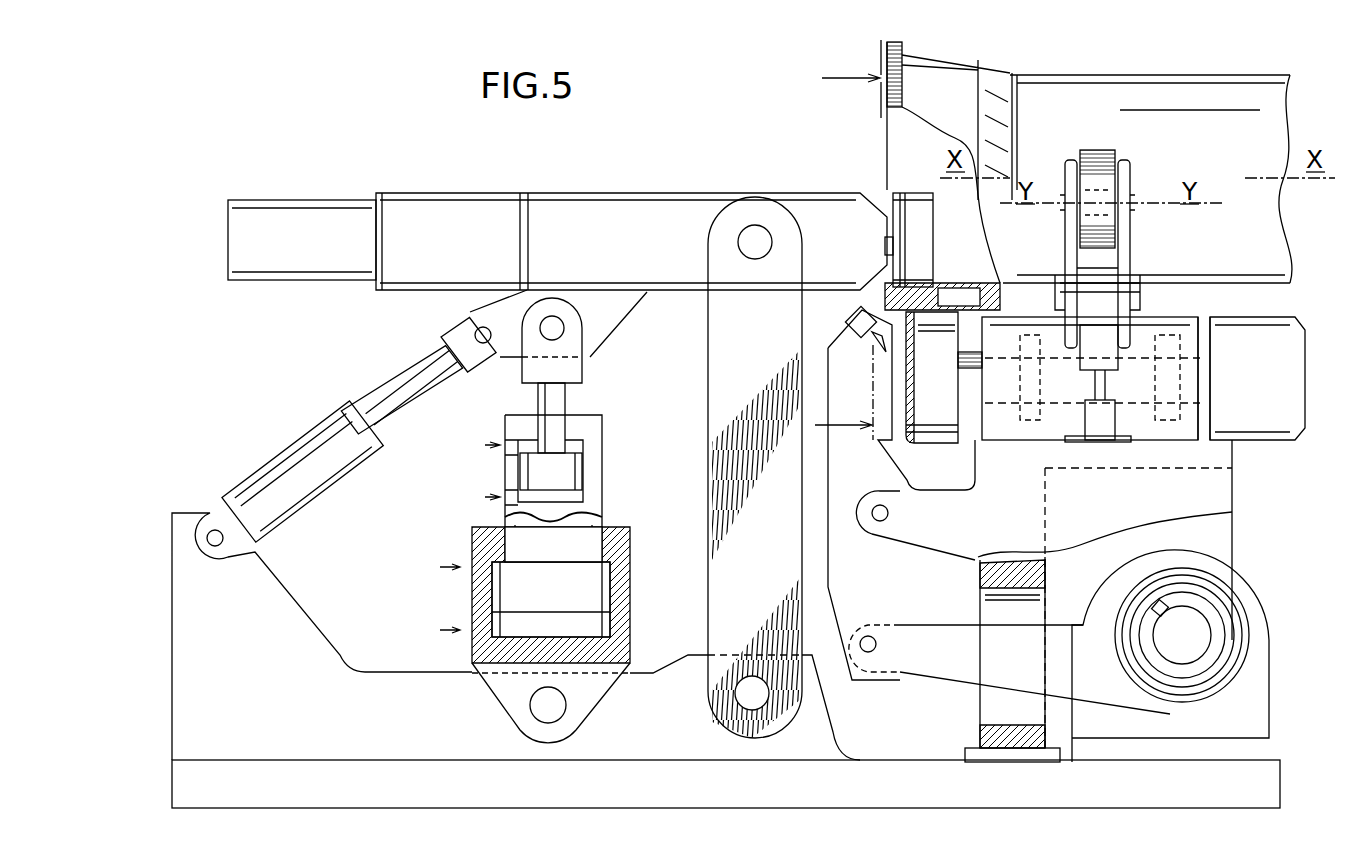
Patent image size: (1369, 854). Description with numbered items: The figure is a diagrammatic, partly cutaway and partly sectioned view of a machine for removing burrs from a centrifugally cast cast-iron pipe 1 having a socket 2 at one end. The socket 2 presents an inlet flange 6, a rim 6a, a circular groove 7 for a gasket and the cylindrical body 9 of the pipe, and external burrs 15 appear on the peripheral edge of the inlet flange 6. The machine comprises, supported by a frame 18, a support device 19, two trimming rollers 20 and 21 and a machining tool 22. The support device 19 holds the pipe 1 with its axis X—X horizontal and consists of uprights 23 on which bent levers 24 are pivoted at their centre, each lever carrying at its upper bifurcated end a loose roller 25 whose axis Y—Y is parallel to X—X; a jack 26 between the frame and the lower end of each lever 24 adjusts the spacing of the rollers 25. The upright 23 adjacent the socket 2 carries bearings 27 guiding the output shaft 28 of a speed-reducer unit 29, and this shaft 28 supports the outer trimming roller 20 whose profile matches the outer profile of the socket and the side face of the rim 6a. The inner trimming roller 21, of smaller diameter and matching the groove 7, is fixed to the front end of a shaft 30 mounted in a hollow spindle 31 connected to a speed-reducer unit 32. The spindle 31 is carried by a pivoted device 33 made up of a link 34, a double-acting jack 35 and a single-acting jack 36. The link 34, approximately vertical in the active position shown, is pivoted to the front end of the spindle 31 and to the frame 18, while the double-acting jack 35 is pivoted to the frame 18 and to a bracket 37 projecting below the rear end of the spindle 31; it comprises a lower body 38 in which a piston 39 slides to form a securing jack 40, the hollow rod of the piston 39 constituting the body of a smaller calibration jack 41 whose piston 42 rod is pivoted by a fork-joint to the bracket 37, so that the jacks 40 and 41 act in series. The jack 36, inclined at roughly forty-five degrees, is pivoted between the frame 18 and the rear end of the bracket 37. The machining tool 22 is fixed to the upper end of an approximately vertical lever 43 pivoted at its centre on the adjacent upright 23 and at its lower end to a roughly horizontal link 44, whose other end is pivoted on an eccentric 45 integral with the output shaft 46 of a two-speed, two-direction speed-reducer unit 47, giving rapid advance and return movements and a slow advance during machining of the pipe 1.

The cast-iron pipe 1 is at (1124, 66).
The socket 2 is at (960, 82).
The inlet flange 6 is at (845, 67).
The rim 6a is at (920, 322).
The circular groove 7 is at (925, 280).
The body of the pipe 9 is at (1255, 105).
The external burrs 15 is at (880, 350).
The frame 18 is at (795, 802).
The support device 19 is at (1166, 532).
The outer trimming roller 20 is at (935, 430).
The inner trimming roller 21 is at (928, 230).
The machining tool 22 is at (846, 322).
The upright 23 is at (980, 578).
The bent lever 24 is at (1130, 245).
The loose roller 25 is at (1098, 165).
The jack 26 is at (1100, 428).
The bearings 27 is at (1195, 330).
The output shaft 28 is at (975, 370).
The speed-reducer unit 29 is at (1288, 370).
The shaft 30 is at (885, 235).
The hollow spindle 31 is at (648, 222).
The speed-reducer unit 32 is at (286, 218).
The pivoted device 33 is at (382, 497).
The link 34 is at (712, 550).
The double-acting jack 35 is at (606, 397).
The single-acting jack 36 is at (270, 460).
The bracket 37 is at (610, 308).
The lower body 38 is at (622, 622).
The piston 39 is at (560, 603).
The securing jack 40 is at (598, 510).
The calibration jack 41 is at (614, 467).
The piston 42 is at (540, 470).
The lever 43 is at (835, 522).
The link 44 is at (945, 665).
The eccentric 45 is at (1147, 660).
The output shaft 46 is at (1190, 650).
The speed-reducer unit 47 is at (1245, 598).